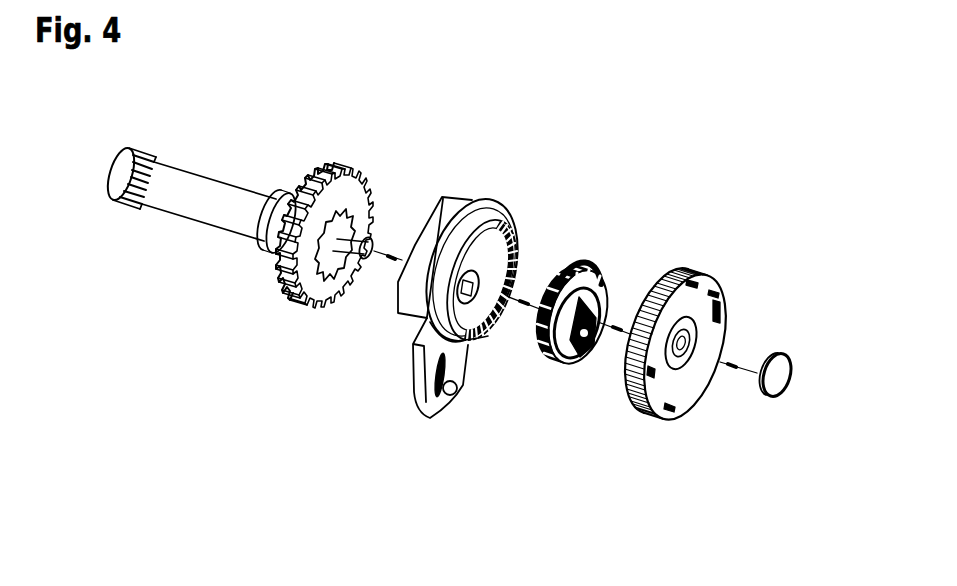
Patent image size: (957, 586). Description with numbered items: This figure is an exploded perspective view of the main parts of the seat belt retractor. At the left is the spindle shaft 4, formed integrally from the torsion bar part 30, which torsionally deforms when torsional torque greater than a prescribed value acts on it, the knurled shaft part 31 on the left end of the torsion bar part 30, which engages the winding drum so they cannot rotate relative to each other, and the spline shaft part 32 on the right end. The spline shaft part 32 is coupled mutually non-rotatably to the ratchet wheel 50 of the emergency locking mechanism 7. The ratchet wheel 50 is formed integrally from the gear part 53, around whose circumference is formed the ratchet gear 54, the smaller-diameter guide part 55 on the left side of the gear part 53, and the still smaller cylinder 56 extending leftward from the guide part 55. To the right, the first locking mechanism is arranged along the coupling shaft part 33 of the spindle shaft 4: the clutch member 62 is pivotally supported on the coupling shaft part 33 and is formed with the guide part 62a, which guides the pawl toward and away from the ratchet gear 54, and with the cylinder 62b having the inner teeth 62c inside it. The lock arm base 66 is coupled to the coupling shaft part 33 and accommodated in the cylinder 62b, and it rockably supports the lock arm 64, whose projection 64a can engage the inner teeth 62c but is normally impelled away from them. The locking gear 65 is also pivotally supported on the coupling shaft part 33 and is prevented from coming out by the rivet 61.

The spindle shaft 4 is at (236, 164).
The emergency locking mechanism 7 is at (628, 148).
The torsion bar part 30 is at (194, 216).
The knurled shaft part 31 is at (124, 201).
The spline shaft part 32 is at (328, 304).
The coupling shaft part 33 is at (369, 236).
The ratchet wheel 50 is at (375, 152).
The gear part 53 is at (363, 184).
The ratchet gear 54 is at (334, 160).
The guide part 55 is at (291, 191).
The cylinder 56 is at (271, 258).
The rivet 61 is at (788, 377).
The clutch member 62 is at (444, 196).
The guide part 62a is at (452, 408).
The cylinder 62b is at (499, 205).
The inner teeth 62c is at (487, 338).
The lock arm 64 is at (549, 351).
The projection 64a is at (537, 352).
The locking gear 65 is at (628, 405).
The lock arm base 66 is at (570, 271).